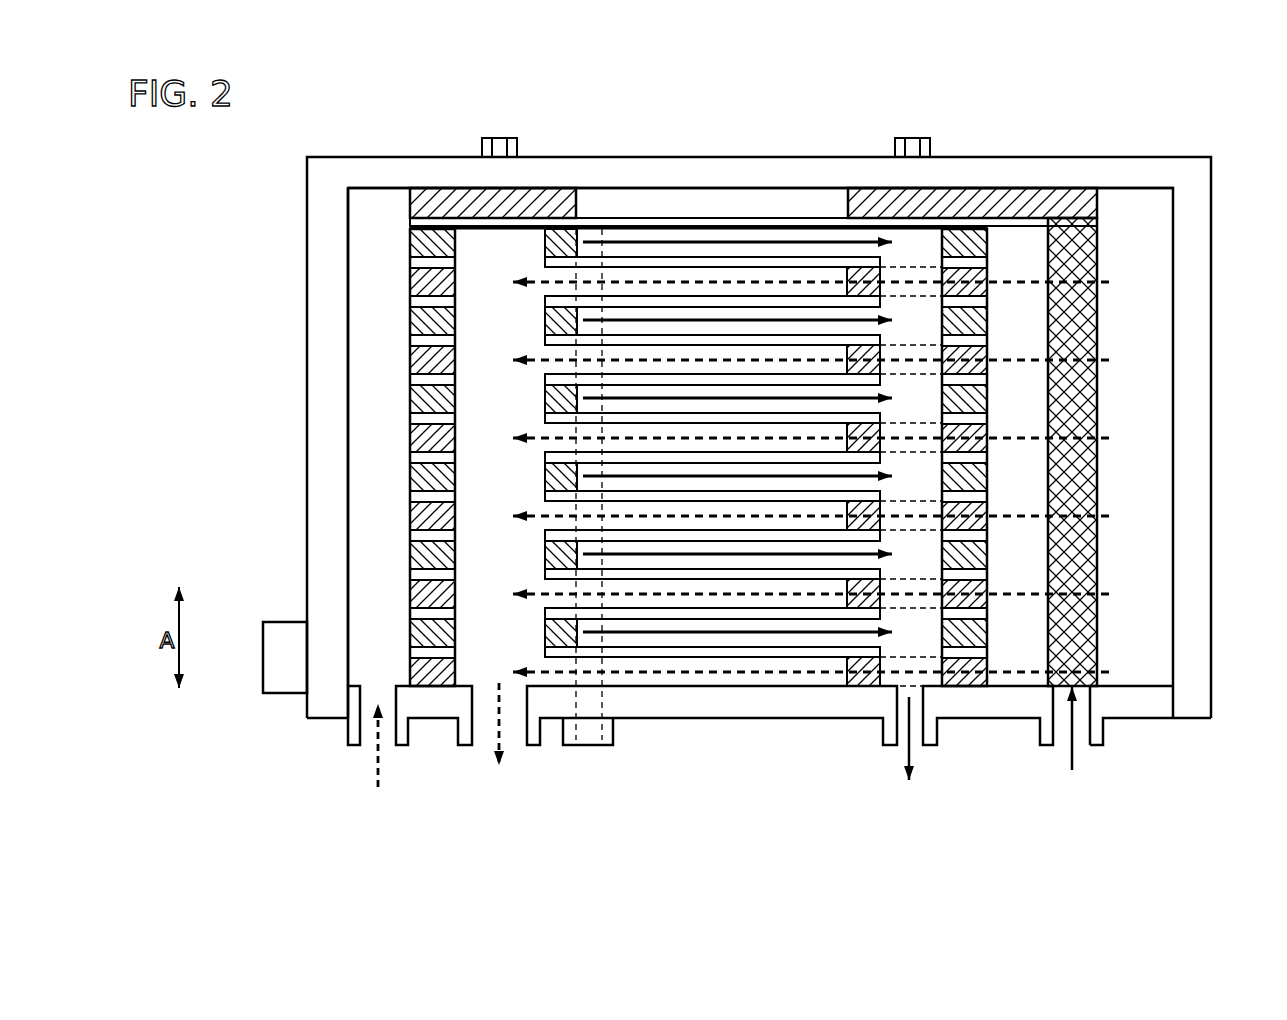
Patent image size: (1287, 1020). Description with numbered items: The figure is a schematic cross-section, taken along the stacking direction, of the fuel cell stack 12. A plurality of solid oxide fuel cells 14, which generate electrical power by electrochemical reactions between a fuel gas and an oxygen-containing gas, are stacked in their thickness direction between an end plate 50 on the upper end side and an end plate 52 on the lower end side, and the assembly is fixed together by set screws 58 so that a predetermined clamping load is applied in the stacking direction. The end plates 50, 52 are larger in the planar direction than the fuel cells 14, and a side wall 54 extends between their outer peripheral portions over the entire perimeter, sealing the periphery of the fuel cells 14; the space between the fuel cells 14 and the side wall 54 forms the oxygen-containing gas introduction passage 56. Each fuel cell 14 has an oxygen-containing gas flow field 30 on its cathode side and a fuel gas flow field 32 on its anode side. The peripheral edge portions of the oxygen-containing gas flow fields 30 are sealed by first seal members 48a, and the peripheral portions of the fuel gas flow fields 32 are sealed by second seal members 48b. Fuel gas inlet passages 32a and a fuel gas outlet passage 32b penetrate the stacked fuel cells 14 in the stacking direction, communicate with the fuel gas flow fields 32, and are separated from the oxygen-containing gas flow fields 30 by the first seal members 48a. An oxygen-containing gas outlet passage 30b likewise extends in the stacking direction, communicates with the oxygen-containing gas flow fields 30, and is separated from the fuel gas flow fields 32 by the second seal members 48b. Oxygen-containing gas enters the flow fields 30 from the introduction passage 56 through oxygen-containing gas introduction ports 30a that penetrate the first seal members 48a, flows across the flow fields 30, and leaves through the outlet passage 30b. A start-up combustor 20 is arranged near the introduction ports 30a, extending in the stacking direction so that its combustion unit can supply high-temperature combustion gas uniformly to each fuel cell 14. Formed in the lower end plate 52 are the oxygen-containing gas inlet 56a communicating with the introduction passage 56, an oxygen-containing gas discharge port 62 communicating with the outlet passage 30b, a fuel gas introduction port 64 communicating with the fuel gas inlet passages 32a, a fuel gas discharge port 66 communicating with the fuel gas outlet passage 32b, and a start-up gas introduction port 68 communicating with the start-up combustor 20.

The fuel cell stack 12 is at (1142, 142).
The fuel cell 14 is at (698, 293).
The start-up combustor 20 is at (1098, 322).
The oxygen-containing gas flow field 30 is at (653, 430).
The oxygen-containing gas introduction port 30a is at (975, 279).
The oxygen-containing gas outlet passage 30b is at (508, 560).
The fuel gas flow field 32 is at (755, 392).
The fuel gas inlet passage 32a is at (598, 677).
The fuel gas outlet passage 32b is at (915, 560).
The first seal member 48a is at (418, 438).
The second seal member 48b is at (438, 403).
The end plate 50 is at (1033, 170).
The end plate 52 is at (714, 700).
The side wall 54 is at (335, 428).
The oxygen-containing gas introduction passage 56 is at (373, 342).
The oxygen-containing gas inlet 56a is at (360, 702).
The set screw 58 is at (500, 138).
The oxygen-containing gas discharge port 62 is at (465, 748).
The fuel gas introduction port 64 is at (588, 737).
The fuel gas discharge port 66 is at (885, 728).
The start-up gas introduction port 68 is at (1040, 728).